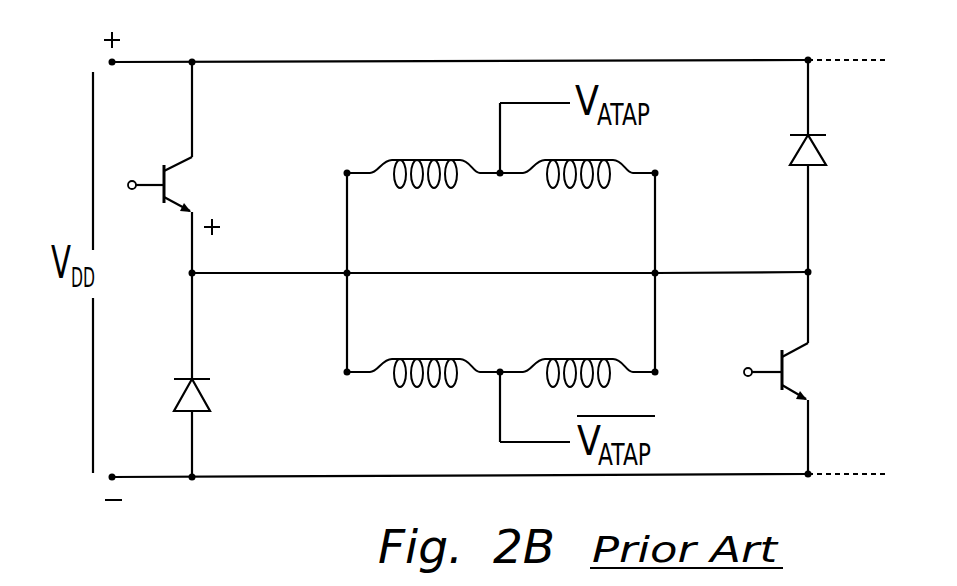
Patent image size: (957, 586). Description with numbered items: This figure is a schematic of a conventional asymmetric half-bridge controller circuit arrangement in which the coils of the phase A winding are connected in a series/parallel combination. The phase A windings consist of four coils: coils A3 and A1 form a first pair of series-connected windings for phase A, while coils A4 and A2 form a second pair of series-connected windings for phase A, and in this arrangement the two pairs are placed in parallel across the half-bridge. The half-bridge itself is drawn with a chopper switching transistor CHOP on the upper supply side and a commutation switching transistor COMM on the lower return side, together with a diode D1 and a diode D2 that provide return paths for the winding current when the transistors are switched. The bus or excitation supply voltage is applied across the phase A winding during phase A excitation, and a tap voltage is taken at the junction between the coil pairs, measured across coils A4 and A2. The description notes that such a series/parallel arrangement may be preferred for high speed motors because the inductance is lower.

The chopper transistor CHOP is at (189, 167).
The commutation transistor COMM is at (806, 373).
The diode D1 is at (826, 166).
The diode D2 is at (175, 375).
The coil A1 is at (577, 358).
The coil A2 is at (577, 191).
The coil A3 is at (423, 191).
The coil A4 is at (423, 358).